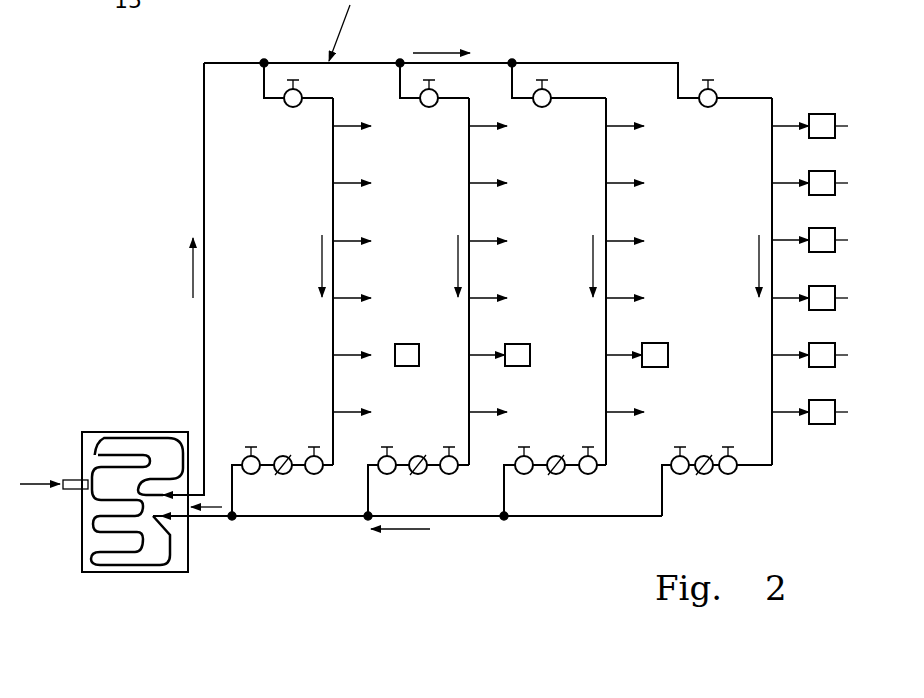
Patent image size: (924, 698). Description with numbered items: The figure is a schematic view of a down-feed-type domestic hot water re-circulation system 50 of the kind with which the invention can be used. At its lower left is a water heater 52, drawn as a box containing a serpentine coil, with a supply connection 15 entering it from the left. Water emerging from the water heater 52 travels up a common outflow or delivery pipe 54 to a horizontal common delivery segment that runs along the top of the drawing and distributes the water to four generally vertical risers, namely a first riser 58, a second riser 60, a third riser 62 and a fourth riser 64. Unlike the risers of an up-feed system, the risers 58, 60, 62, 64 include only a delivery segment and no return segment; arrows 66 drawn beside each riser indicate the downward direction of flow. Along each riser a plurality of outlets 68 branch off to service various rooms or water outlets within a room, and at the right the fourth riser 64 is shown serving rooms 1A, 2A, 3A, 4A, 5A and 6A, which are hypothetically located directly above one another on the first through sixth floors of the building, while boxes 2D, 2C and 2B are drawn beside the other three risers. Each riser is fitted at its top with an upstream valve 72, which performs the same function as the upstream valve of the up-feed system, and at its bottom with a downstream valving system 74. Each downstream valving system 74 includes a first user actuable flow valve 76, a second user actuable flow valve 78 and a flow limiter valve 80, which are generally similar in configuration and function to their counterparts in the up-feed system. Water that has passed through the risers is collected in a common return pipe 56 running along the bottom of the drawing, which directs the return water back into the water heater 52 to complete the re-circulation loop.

The fluid inlet / supply source 15 is at (33, 485).
The down-feed-type domestic hot water re-circulation system 50 is at (764, 77).
The water heater 52 is at (131, 428).
The outflow pipe 54 is at (202, 143).
The common return pipe 56 is at (336, 522).
The first riser 58 is at (758, 133).
The second riser 60 is at (592, 129).
The third riser 62 is at (443, 117).
The fourth riser 64 is at (312, 120).
The flow path in header 66 is at (333, 157).
The outlets 68 is at (347, 182).
The upstream valve 72 is at (287, 88).
The downstream valving system 74 is at (278, 488).
The first user actuable flow valve 76 is at (308, 457).
The second user actuable flow valve 78 is at (243, 458).
The flow limiter valve 80 is at (277, 457).
The room 1A is at (850, 412).
The room 2A is at (850, 355).
The room 3A is at (850, 298).
The room 4A is at (850, 240).
The room 5A is at (850, 183).
The room 6A is at (850, 126).
The zone sensor 2B is at (656, 343).
The zone sensor 2C is at (519, 344).
The zone sensor 2D is at (391, 344).